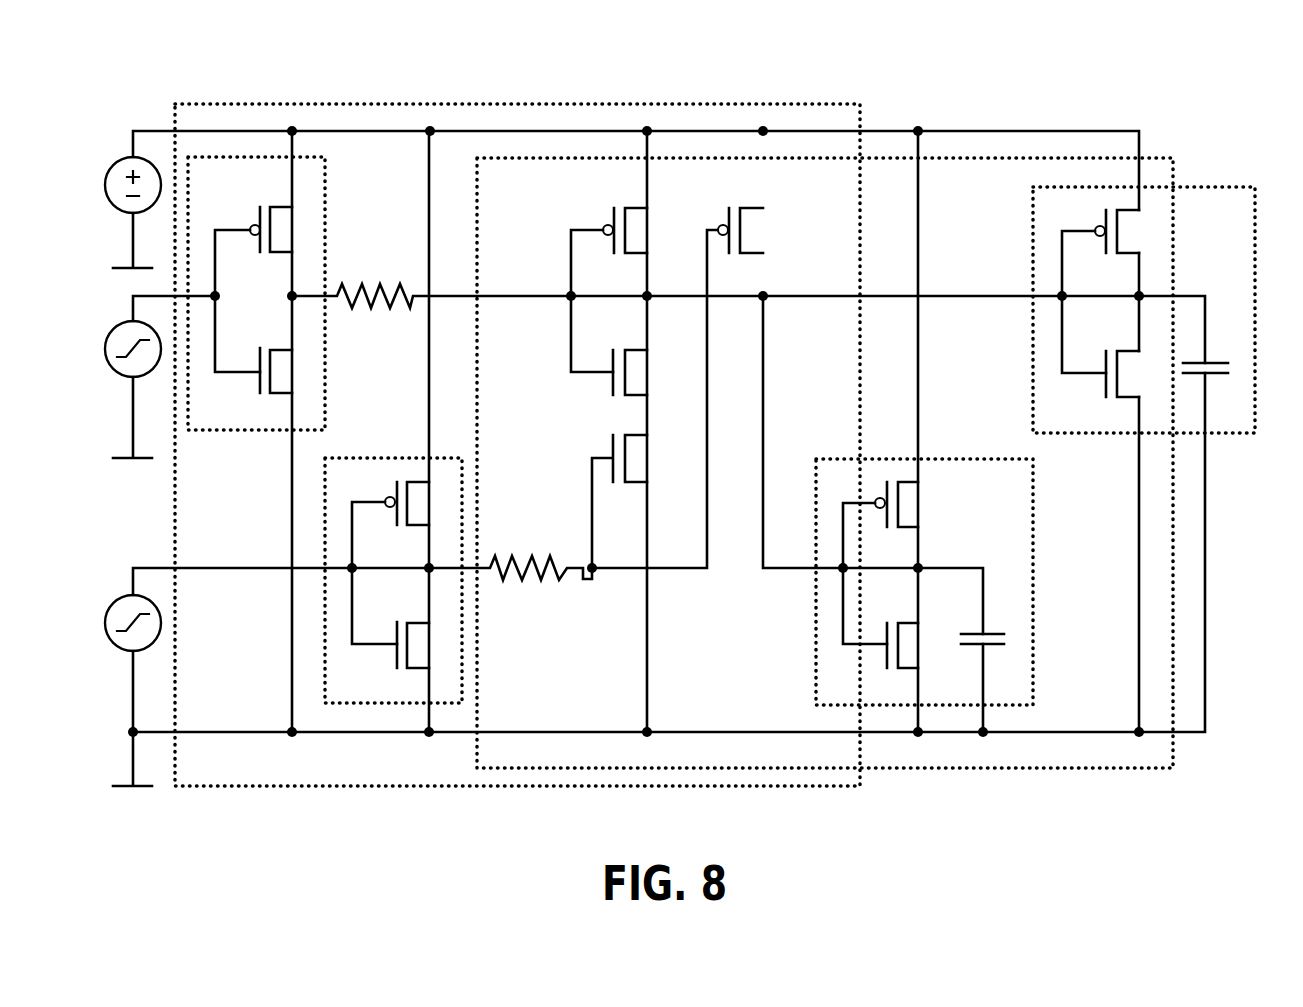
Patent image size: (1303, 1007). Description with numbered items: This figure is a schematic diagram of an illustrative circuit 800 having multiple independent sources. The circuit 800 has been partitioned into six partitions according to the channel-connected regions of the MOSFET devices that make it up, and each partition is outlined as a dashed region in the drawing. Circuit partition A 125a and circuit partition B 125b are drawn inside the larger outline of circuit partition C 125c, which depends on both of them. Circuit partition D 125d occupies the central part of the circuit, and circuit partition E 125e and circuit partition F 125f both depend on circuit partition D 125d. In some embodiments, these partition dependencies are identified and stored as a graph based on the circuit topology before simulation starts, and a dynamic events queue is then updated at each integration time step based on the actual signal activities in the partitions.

The circuit 800 is at (1188, 92).
The circuit partition A 125a is at (279, 432).
The circuit partition B 125b is at (367, 703).
The circuit partition C 125c is at (274, 787).
The circuit partition D 125d is at (505, 158).
The circuit partition E 125e is at (1034, 272).
The circuit partition F 125f is at (1033, 521).